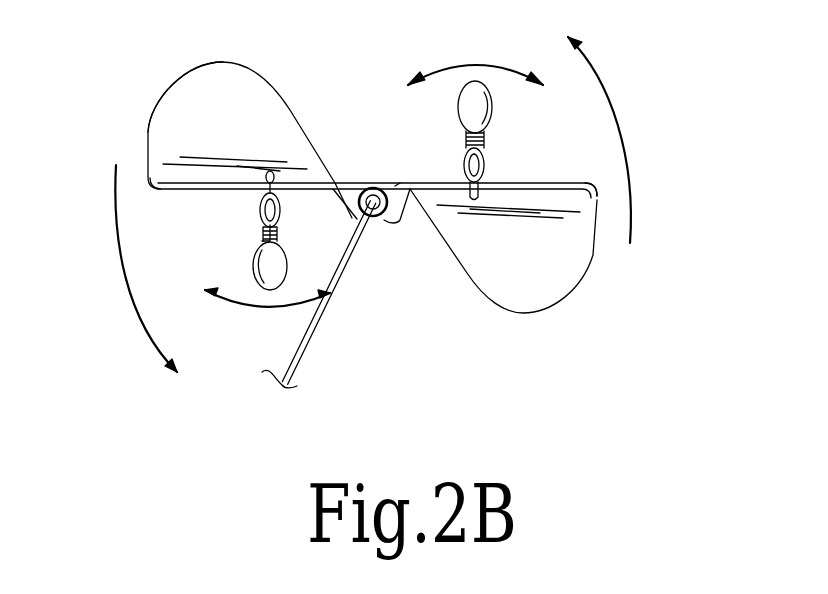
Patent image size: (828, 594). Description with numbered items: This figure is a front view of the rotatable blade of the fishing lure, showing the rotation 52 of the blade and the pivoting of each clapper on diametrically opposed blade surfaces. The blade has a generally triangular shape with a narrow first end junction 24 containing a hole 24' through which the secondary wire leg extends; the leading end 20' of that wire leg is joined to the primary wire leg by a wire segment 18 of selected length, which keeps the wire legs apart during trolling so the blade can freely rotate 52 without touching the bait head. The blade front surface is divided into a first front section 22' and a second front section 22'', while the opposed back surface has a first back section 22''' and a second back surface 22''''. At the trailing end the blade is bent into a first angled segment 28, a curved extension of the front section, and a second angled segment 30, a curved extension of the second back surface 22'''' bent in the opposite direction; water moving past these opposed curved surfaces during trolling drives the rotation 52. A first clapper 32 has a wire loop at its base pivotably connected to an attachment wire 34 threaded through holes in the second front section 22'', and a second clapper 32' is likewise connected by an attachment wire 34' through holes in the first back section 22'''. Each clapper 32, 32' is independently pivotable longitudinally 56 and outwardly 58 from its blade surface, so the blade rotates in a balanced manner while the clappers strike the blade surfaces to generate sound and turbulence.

The wire segment 18 is at (308, 335).
The leading end of secondary wire leg 20' is at (376, 162).
The first front section 22' is at (403, 246).
The second front section 22'' is at (182, 213).
The first back section 22''' is at (579, 161).
The second back surface 22'''' is at (155, 121).
The first end junction 24 is at (390, 237).
The hole 24' is at (418, 155).
The first angled segment 28 is at (537, 275).
The second angled segment 30 is at (240, 124).
The first clapper 32 is at (232, 257).
The second clapper 32' is at (520, 107).
The attachment wire 34 is at (294, 212).
The attachment wire 34' is at (515, 165).
The blade rotation 52 is at (116, 268).
The longitudinal pivoting 56 is at (443, 68).
The outward pivoting 58 is at (248, 308).